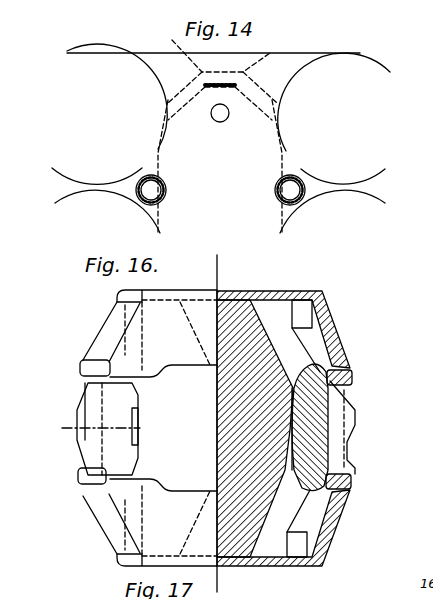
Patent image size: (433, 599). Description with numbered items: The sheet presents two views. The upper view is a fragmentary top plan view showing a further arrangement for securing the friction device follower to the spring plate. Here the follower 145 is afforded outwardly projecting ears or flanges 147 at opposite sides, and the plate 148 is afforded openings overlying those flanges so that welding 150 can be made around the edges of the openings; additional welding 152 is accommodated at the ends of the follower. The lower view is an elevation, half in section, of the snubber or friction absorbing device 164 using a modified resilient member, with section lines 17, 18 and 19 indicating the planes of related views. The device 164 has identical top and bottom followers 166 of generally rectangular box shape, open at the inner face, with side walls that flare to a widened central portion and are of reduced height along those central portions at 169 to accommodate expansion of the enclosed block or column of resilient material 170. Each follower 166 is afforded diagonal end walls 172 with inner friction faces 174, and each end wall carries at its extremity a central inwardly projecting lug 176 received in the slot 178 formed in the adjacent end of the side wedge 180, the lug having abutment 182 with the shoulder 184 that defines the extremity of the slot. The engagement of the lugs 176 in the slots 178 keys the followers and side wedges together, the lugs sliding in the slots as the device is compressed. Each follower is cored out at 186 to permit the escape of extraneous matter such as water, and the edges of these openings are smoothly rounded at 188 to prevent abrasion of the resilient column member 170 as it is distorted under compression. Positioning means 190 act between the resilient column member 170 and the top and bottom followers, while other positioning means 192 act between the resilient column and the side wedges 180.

In FIG. 14, the follower 145 is at (272, 54).
In FIG. 14, the outwardly projecting ears or flanges 147 is at (155, 155).
In FIG. 14, the plate 148 is at (218, 135).
In FIG. 14, the welding 150 is at (266, 191).
In FIG. 14, the welding at follower ends 152 is at (142, 35).
In FIG. 16, the line 17— 17 is at (213, 398).
In FIG. 16, the line 18— 18 is at (237, 273).
In FIG. 16, the line 19— 19 is at (355, 338).
In FIG. 16, the snubber or friction absorbing device 164 is at (78, 482).
In FIG. 16, the top and bottom followers 166 is at (323, 297).
In FIG. 16, the reduced-height side wall portions 169 is at (163, 438).
In FIG. 16, the block or column of resilient material 170 is at (240, 470).
In FIG. 16, the diagonal end walls 172 is at (312, 349).
In FIG. 16, the inner friction faces 174 is at (340, 352).
In FIG. 16, the central inwardly projecting lug 176 is at (356, 395).
In FIG. 16, the slot 178 is at (305, 480).
In FIG. 16, the side wedge 180 is at (130, 407).
In FIG. 16, the abutment 182 is at (100, 365).
In FIG. 16, the shoulder 184 is at (313, 370).
In FIG. 16, the cored-out openings 186 is at (165, 291).
In FIG. 16, the smoothly rounded edges 188 is at (283, 562).
In FIG. 16, the positioning means 190 is at (226, 294).
In FIG. 16, the positioning means 192 is at (270, 446).